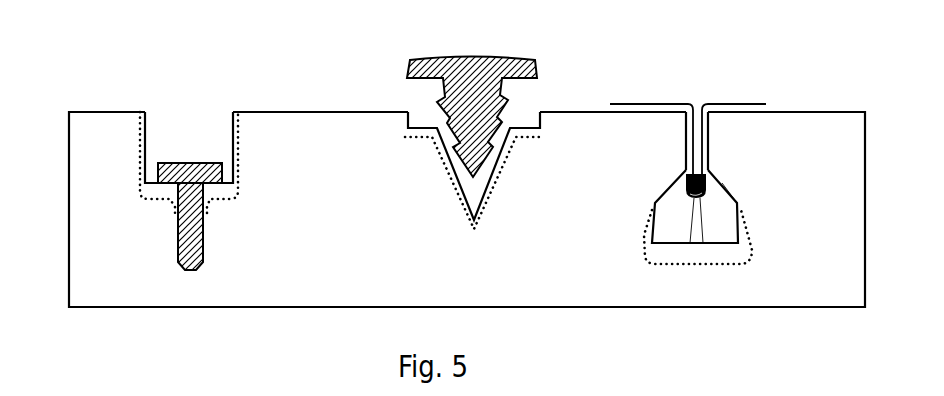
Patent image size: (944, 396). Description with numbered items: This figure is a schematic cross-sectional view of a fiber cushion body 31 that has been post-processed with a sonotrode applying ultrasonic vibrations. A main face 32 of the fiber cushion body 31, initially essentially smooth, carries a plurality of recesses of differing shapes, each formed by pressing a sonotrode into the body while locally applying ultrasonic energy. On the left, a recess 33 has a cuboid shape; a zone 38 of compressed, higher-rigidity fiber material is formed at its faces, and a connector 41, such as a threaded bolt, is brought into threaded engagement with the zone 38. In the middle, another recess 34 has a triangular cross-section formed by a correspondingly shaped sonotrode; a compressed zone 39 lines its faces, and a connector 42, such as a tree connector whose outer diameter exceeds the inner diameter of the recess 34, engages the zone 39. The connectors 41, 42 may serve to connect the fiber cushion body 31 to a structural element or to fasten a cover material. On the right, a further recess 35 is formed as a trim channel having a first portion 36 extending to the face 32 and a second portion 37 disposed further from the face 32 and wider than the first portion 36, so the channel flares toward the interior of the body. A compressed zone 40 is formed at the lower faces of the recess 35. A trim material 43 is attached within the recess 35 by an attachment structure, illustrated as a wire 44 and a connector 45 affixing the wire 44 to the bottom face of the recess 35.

The fiber cushion body 31 is at (66, 57).
The main face 32 is at (103, 112).
The recess 33 is at (232, 127).
The recess 34 is at (408, 117).
The recess 35 is at (711, 104).
The first portion 36 is at (705, 145).
The second portion 37 is at (730, 203).
The zone 38 is at (220, 192).
The zone 39 is at (498, 184).
The zone 40 is at (737, 252).
The connector 41 is at (195, 163).
The connector 42 is at (420, 60).
The trim material 43 is at (634, 104).
The wire 44 is at (688, 182).
The connector 45 is at (690, 210).